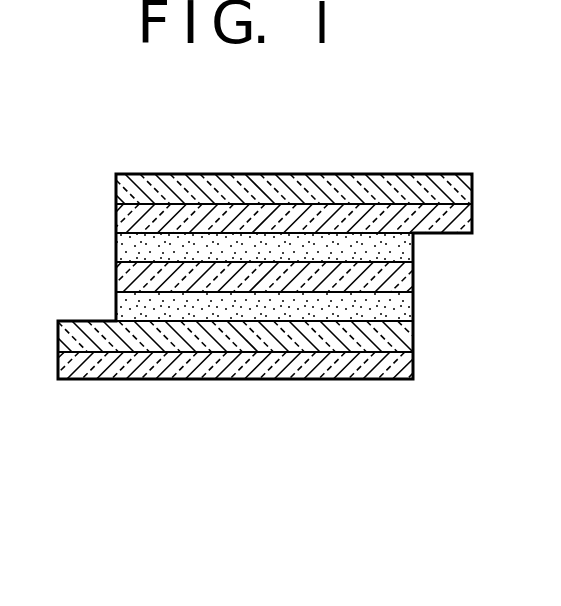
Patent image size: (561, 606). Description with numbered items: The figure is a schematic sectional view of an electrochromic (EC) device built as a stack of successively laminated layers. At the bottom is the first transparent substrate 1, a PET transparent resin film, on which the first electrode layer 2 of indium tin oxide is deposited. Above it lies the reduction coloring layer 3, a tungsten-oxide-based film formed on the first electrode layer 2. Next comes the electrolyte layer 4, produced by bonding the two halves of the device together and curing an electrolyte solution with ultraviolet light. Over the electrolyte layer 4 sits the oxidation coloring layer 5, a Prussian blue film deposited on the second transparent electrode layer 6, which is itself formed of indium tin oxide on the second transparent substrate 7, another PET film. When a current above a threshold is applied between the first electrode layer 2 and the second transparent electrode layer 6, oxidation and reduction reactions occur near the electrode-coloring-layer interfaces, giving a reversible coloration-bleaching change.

The first transparent substrate 1 is at (413, 368).
The first electrode layer 2 is at (413, 332).
The reduction coloring layer 3 is at (413, 305).
The electrolyte layer 4 is at (118, 273).
The oxidation coloring layer 5 is at (120, 243).
The second transparent electrode layer 6 is at (120, 215).
The second transparent substrate 7 is at (120, 187).